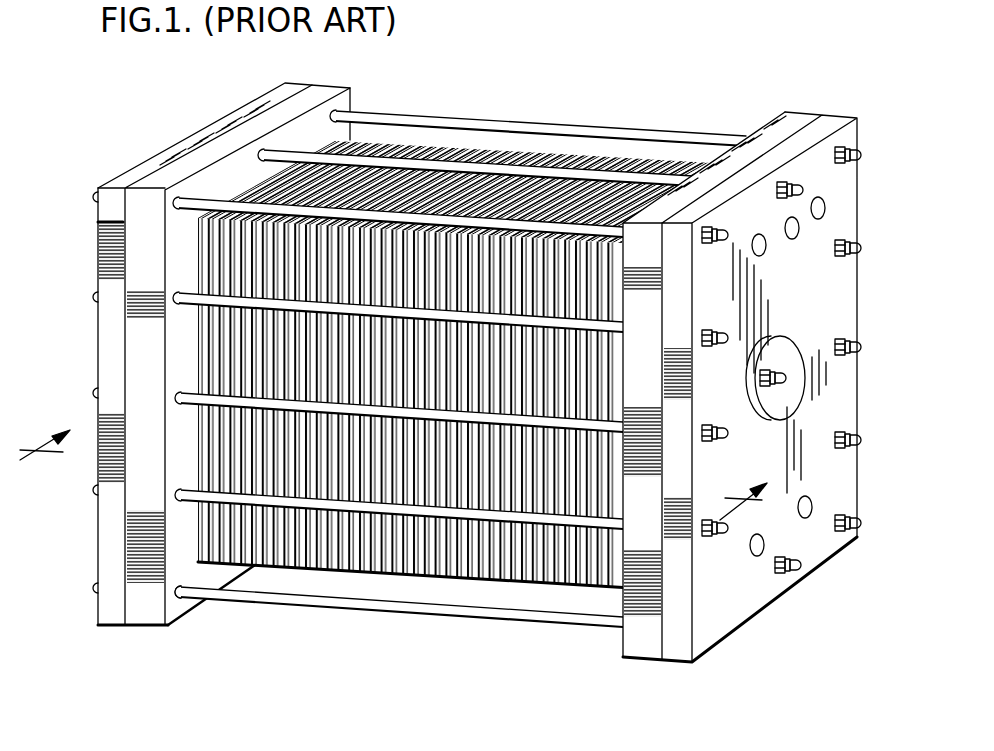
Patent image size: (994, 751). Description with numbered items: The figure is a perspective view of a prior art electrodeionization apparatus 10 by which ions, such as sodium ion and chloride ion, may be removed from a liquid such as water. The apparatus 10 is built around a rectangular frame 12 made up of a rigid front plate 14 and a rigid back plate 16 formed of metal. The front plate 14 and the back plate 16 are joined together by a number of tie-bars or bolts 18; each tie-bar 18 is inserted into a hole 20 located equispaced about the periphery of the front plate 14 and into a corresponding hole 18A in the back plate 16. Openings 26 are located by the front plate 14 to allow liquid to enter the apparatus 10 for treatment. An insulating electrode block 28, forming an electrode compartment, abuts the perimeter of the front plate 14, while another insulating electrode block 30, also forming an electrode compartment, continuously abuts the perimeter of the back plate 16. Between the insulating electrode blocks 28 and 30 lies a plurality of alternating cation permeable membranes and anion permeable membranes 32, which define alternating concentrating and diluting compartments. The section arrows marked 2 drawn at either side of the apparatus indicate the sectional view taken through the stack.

The electrodeionization apparatus 10 is at (689, 107).
The rectangular frame 12 is at (197, 395).
The front plate 14 is at (736, 420).
The back plate 16 is at (113, 613).
The tie-bar 18 is at (497, 122).
The hole 18A is at (187, 615).
The hole 20 is at (846, 150).
The opening 26 is at (813, 503).
The insulating electrode block 28 is at (638, 647).
The insulating electrode block 30 is at (147, 613).
The cation permeable membranes and anion permeable membranes 32 is at (450, 570).
The section line 2- 2 is at (393, 483).